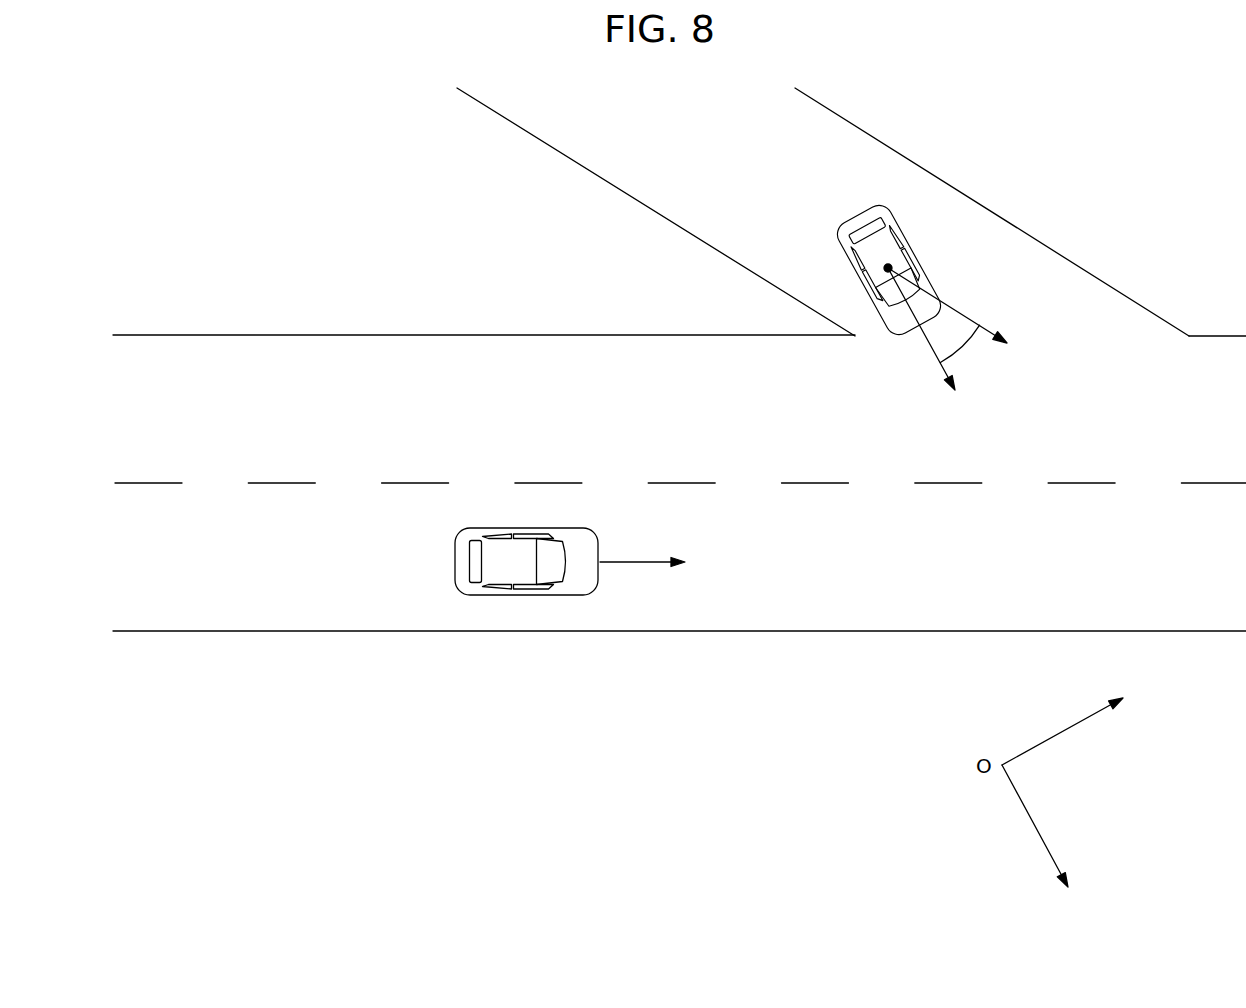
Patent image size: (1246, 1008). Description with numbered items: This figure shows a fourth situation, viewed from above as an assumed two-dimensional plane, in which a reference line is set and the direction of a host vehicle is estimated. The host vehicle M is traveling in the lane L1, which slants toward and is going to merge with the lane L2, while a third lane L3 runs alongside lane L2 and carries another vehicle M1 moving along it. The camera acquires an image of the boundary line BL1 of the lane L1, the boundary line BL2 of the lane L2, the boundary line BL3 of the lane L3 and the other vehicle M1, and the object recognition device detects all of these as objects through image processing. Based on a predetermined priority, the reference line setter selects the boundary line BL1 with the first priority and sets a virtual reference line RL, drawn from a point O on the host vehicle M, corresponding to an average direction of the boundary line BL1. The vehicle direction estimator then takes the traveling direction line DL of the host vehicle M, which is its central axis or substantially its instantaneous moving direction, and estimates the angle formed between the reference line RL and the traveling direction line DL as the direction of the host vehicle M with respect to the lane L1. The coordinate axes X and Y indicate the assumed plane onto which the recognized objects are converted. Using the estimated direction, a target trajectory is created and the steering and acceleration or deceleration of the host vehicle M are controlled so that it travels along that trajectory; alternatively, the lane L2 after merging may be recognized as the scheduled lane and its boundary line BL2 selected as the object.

The lane L1 is at (662, 119).
The lane L2 is at (143, 423).
The lane L3 is at (143, 570).
The boundary line BL1 is at (827, 110).
The boundary line BL2 is at (283, 337).
The boundary line BL3 is at (283, 633).
The host vehicle M is at (910, 213).
The other vehicle M1 is at (455, 556).
The reference point of host vehicle O is at (893, 262).
The reference line RL is at (973, 318).
The direction line of host vehicle DL is at (926, 346).
The X axis X is at (1042, 840).
The Y axis Y is at (1071, 721).